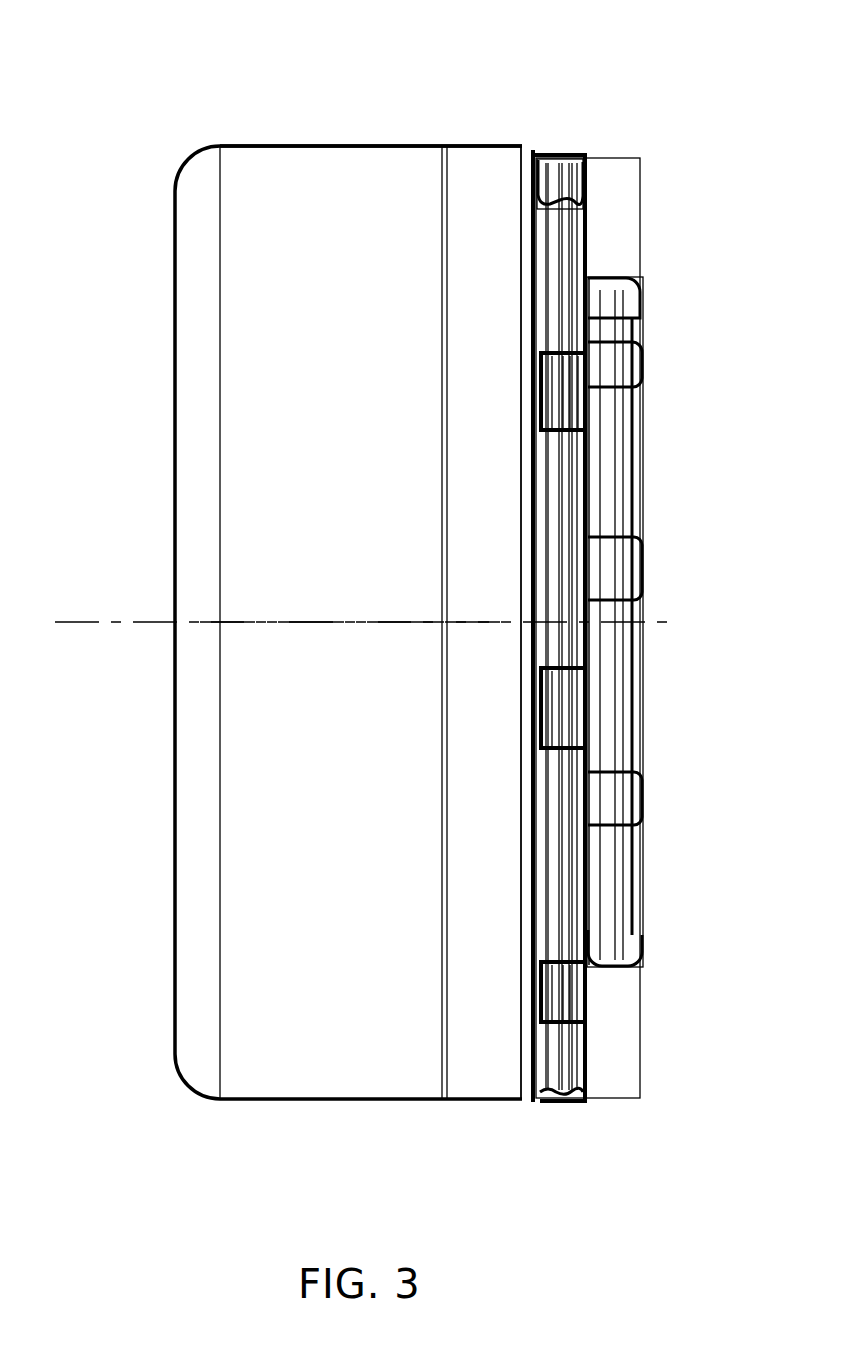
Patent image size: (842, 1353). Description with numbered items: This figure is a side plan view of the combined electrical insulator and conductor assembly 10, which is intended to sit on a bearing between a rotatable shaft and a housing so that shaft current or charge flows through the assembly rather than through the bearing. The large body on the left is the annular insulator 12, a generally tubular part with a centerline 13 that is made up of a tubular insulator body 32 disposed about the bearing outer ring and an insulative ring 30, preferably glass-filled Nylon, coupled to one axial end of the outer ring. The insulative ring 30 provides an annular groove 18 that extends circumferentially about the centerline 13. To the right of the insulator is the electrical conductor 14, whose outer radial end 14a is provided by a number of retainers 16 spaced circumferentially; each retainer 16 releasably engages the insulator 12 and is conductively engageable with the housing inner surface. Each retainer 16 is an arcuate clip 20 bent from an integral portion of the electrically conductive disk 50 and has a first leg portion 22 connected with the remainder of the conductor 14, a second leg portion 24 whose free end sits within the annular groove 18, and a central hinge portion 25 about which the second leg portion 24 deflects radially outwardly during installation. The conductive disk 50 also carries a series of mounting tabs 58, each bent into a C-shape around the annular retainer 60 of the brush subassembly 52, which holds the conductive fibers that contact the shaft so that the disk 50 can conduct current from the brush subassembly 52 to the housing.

The combined electrical insulator and conductor assembly 10 is at (128, 40).
The annular insulator 12 is at (152, 302).
The centerline 13 is at (69, 622).
The electrical conductor 14 is at (680, 262).
The outer radial end 14a is at (569, 154).
The retainer 16 is at (528, 389).
The annular groove 18 is at (554, 288).
The arcuate clip 20 is at (553, 412).
The first leg portion 22 is at (580, 445).
The second leg portion 24 is at (550, 358).
The central hinge portion 25 is at (580, 410).
The insulative ring 30 is at (531, 150).
The tubular insulator body 32 is at (338, 144).
The electrically conductive disk 50 is at (604, 192).
The brush subassembly 52 is at (652, 878).
The mounting tab 58 is at (625, 367).
The annular retainer 60 is at (627, 470).